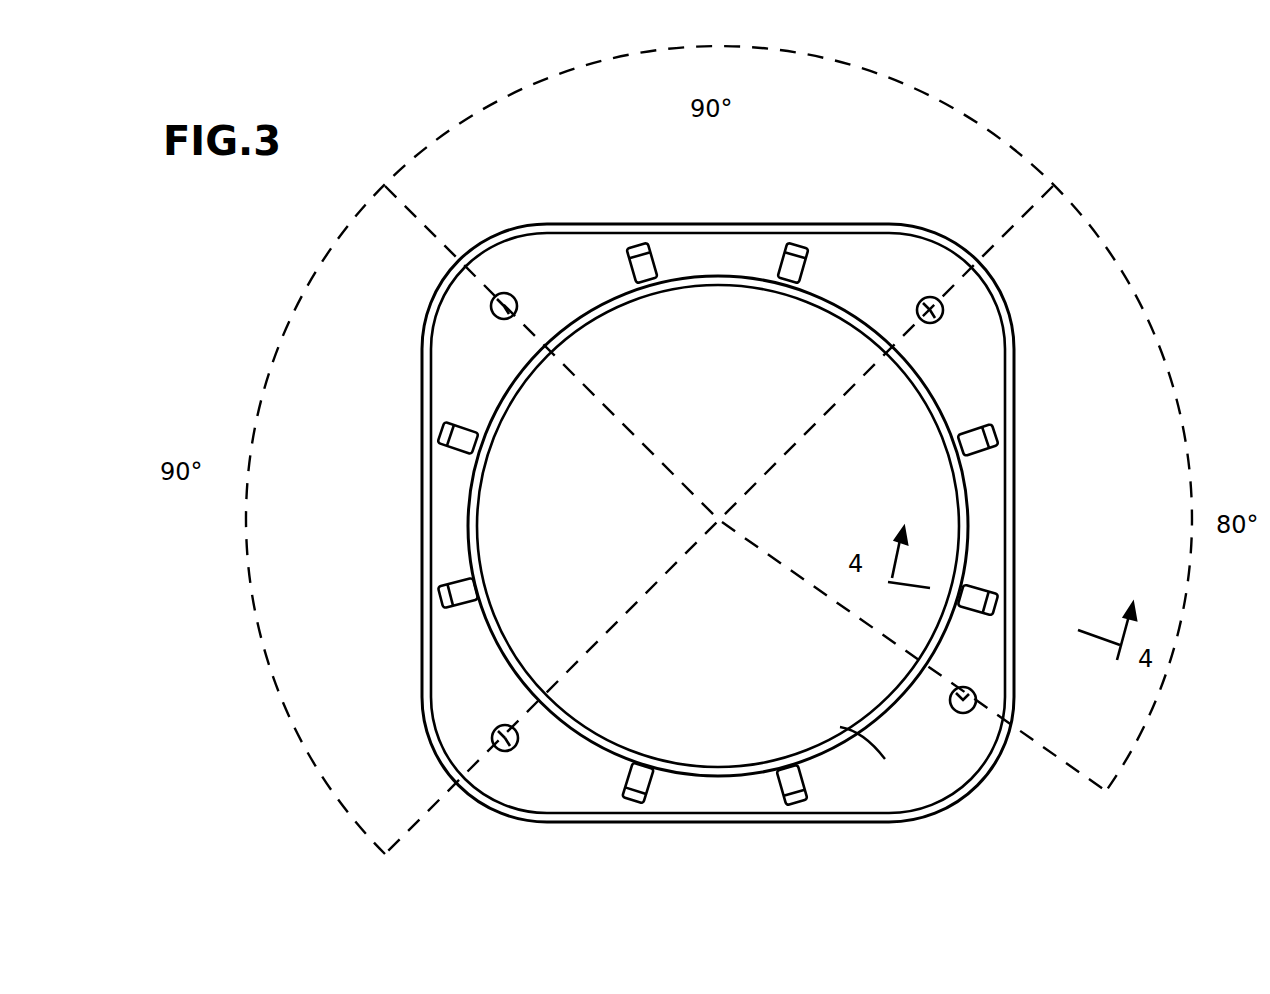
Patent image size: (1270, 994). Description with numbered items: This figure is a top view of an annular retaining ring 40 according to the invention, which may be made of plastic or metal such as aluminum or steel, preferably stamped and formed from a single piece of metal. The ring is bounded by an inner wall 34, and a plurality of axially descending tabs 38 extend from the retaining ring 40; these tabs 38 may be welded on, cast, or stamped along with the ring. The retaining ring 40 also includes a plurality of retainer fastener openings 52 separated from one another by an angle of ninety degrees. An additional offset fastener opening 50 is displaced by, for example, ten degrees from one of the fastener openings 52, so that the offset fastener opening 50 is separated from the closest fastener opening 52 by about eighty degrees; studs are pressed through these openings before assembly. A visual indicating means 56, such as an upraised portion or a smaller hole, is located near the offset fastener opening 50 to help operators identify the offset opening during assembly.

The inner wall 34 is at (521, 385).
The axially descending tabs 38 is at (972, 586).
The retaining ring 40 is at (903, 272).
The offset fastener opening 50 is at (977, 695).
The retainer fastener openings 52 is at (516, 294).
The visual indicating means 56 is at (840, 727).